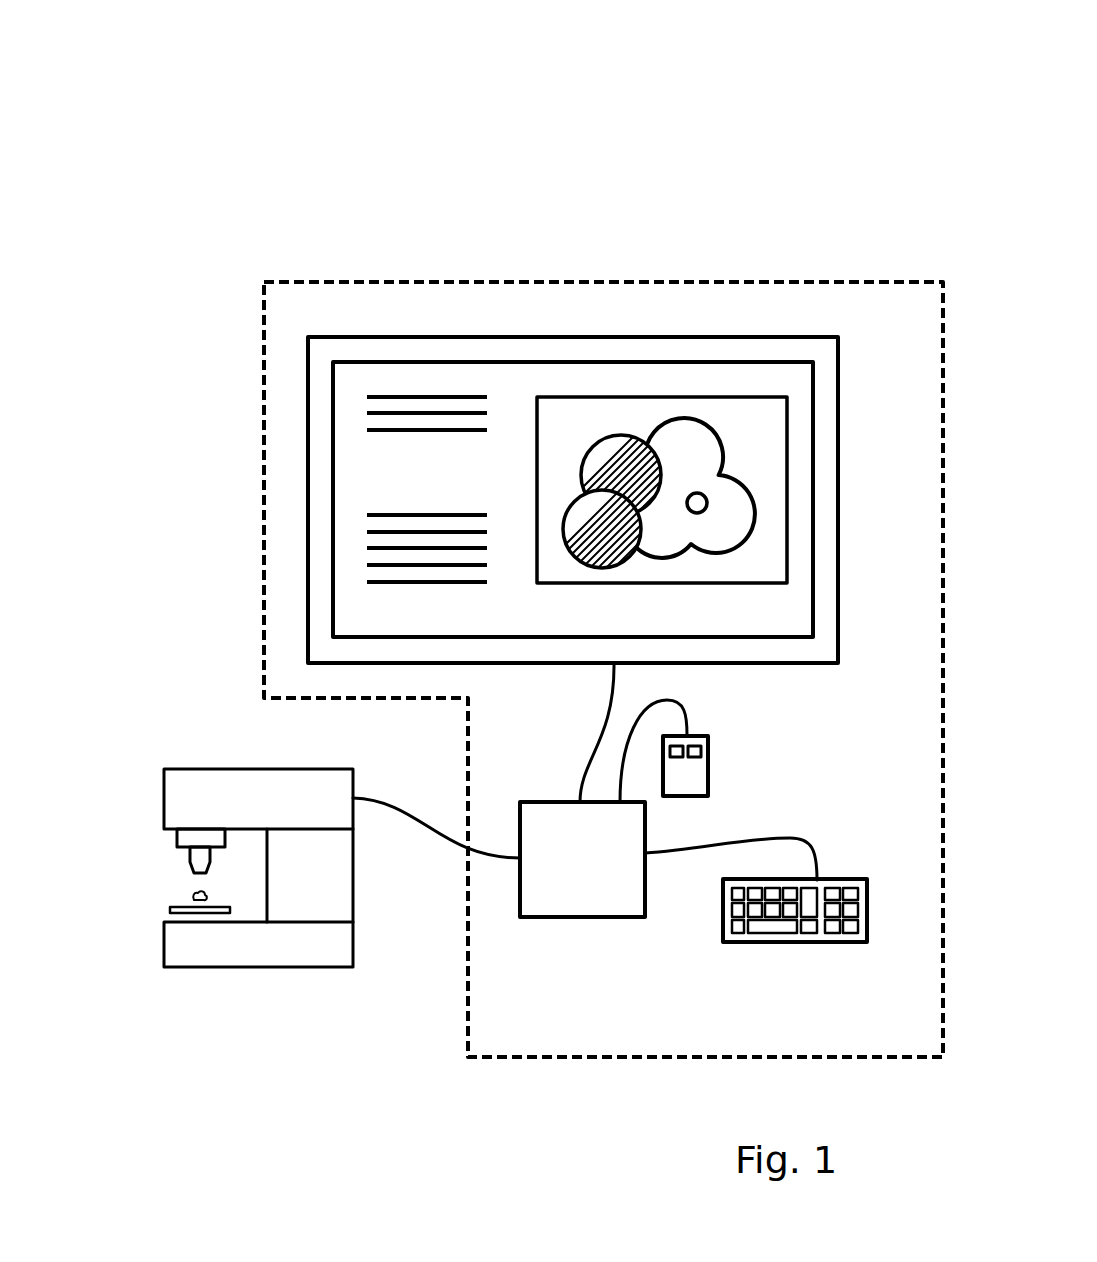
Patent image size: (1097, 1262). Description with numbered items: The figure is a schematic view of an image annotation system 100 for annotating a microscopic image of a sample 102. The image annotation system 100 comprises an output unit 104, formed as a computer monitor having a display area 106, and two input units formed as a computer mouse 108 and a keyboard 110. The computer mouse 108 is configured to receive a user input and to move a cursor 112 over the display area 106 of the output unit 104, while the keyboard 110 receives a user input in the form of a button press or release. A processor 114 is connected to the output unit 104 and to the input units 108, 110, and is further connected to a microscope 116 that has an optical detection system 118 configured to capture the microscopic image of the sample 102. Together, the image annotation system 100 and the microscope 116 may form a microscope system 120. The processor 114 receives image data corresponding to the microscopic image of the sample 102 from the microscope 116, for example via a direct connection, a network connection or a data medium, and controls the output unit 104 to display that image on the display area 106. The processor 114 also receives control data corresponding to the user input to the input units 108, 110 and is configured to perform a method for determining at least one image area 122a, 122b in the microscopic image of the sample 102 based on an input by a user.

The image annotation system 100 is at (353, 282).
The sample 102 is at (193, 897).
The output unit 104 is at (628, 335).
The display area 106 is at (332, 582).
The computer mouse 108 is at (708, 764).
The keyboard 110 is at (802, 943).
The cursor 112 is at (710, 503).
The processor 114 is at (499, 790).
The microscope 116 is at (283, 965).
The optical detection system 118 is at (177, 838).
The microscope system 120 is at (770, 88).
The image area 122a is at (575, 494).
The image area 122b is at (635, 435).